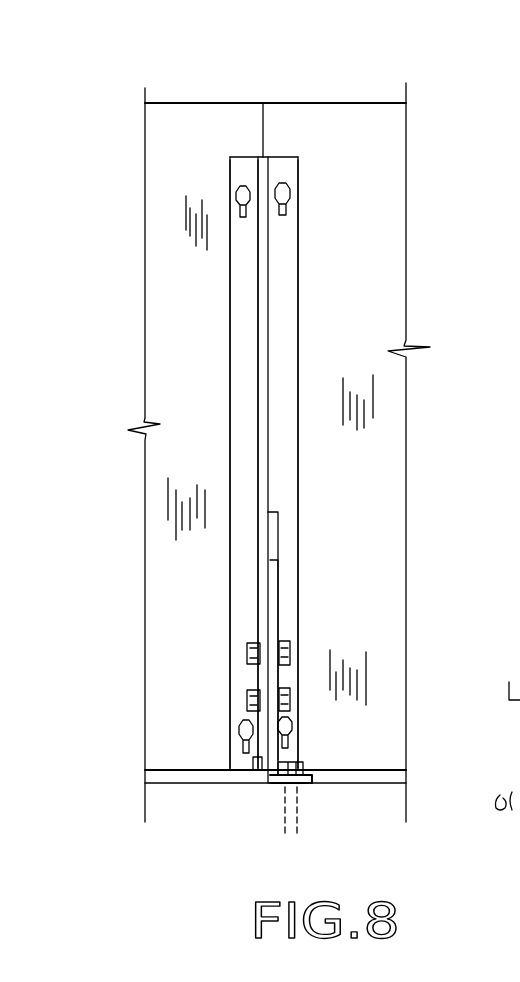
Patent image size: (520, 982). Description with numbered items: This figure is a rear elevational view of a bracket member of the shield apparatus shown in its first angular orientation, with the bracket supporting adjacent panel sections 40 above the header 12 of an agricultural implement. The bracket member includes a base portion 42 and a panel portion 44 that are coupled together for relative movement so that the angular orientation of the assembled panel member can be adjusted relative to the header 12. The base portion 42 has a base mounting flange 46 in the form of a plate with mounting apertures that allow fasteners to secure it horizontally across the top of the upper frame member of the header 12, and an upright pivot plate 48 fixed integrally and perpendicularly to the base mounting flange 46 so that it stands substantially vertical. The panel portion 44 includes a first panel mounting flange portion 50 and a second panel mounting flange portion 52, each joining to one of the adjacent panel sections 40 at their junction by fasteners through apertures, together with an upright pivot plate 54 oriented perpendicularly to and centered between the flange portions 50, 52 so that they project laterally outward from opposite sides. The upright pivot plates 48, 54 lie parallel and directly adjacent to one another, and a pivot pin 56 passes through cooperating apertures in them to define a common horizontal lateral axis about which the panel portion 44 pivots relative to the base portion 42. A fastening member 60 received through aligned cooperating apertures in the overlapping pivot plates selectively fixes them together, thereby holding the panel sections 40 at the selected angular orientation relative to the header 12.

The panel section 40 is at (180, 127).
The header 12 is at (188, 787).
The panel portion 44 is at (274, 239).
The second panel mounting flange portion 52 is at (243, 312).
The first panel mounting flange portion 50 is at (292, 318).
The upright pivot plate 54 is at (270, 285).
The upright pivot plate 48 is at (280, 538).
The base portion 42 is at (275, 607).
The fastening member 60 is at (252, 641).
The base mounting flange 46 is at (300, 785).
The pivot pin 56 is at (258, 774).